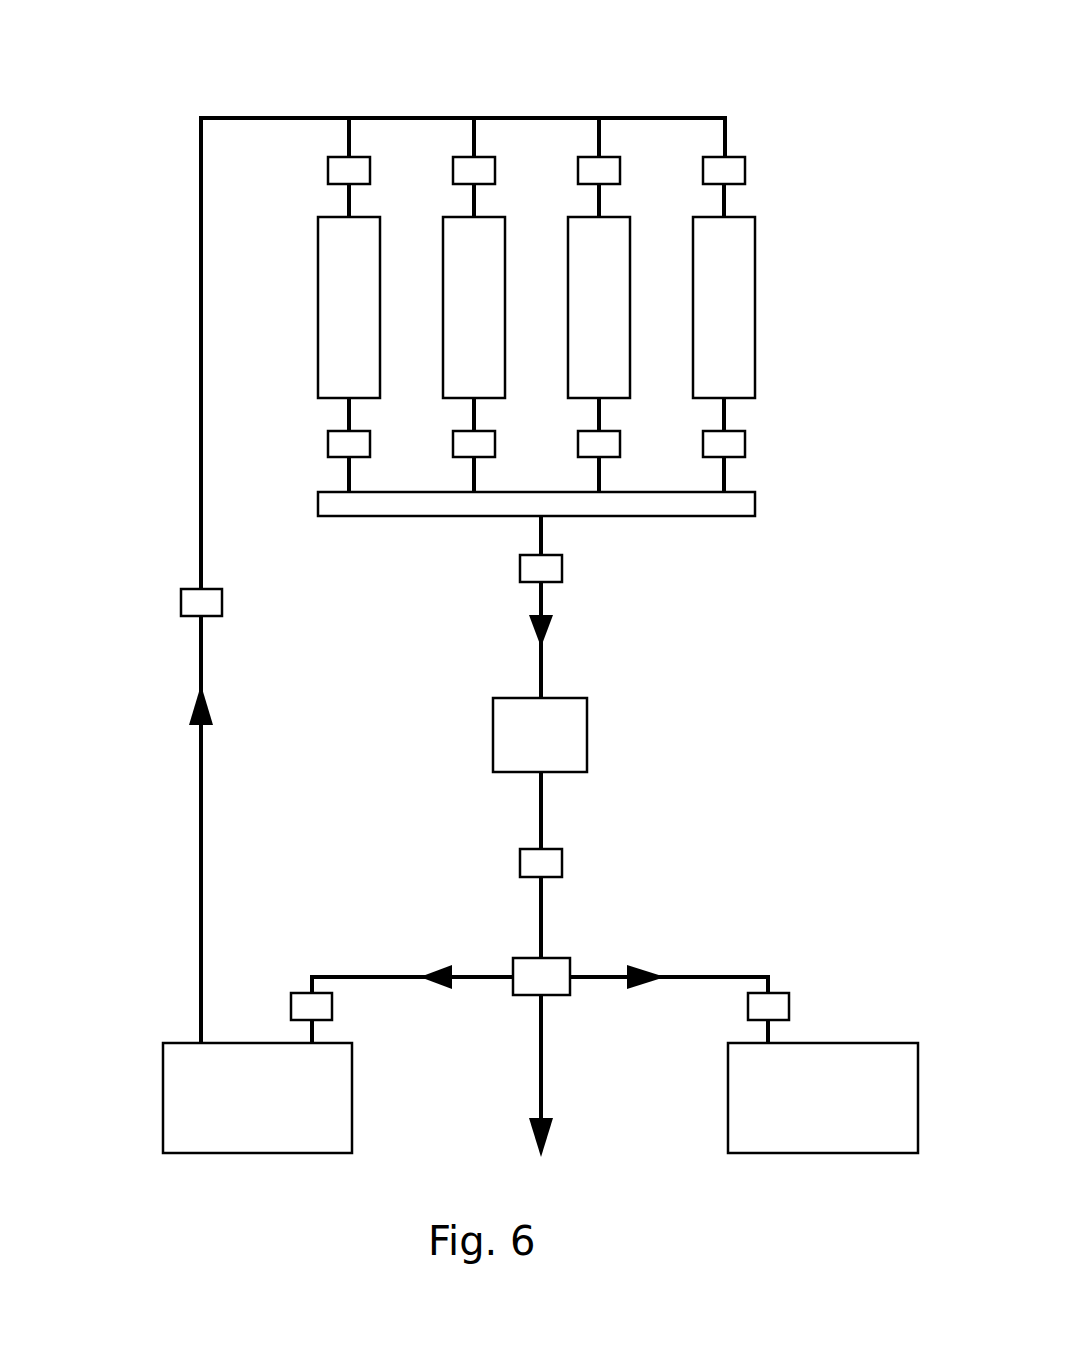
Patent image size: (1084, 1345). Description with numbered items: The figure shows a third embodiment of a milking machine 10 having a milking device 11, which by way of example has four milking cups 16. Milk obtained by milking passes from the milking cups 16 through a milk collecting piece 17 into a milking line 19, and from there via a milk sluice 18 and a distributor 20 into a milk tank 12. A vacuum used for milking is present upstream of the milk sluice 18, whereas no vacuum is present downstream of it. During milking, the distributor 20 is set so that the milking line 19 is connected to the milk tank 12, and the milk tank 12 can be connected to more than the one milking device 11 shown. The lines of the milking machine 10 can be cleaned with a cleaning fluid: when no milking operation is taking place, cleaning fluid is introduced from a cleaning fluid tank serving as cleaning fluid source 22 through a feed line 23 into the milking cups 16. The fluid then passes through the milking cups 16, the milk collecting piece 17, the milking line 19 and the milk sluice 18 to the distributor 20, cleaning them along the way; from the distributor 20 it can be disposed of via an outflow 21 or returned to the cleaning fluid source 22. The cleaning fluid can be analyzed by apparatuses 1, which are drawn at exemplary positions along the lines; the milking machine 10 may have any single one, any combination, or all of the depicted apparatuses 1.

The apparatus 1 is at (291, 1008).
The milking machine 10 is at (140, 84).
The milking device 11 is at (824, 292).
The milk tank 12 is at (805, 1117).
The milking cup 16 is at (740, 323).
The milk collecting piece 17 is at (755, 503).
The milk sluice 18 is at (523, 749).
The milking line 19 is at (541, 670).
The distributor 20 is at (570, 960).
The outflow 21 is at (548, 1140).
The cleaning fluid source 22 is at (240, 1117).
The feed line 23 is at (201, 885).